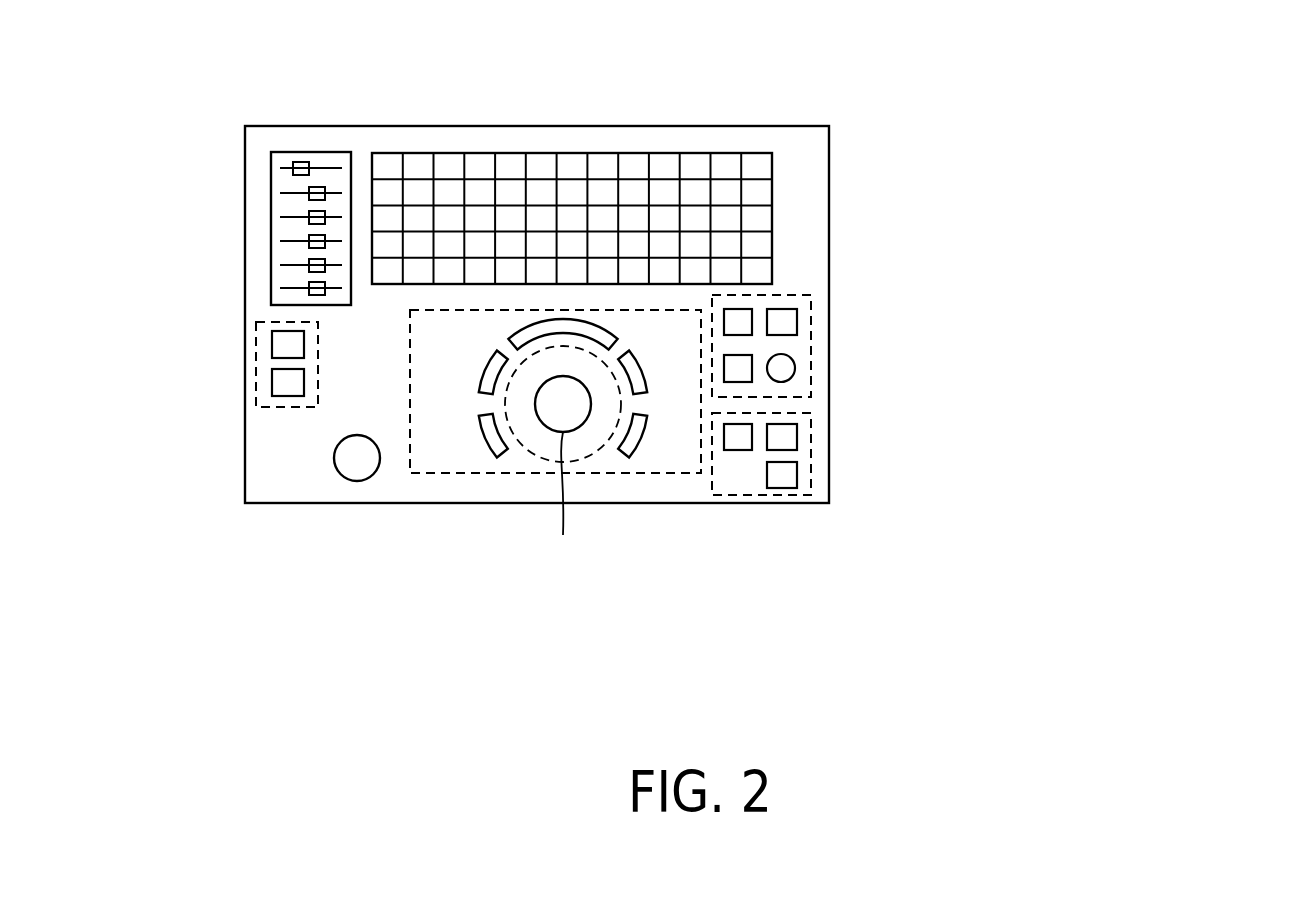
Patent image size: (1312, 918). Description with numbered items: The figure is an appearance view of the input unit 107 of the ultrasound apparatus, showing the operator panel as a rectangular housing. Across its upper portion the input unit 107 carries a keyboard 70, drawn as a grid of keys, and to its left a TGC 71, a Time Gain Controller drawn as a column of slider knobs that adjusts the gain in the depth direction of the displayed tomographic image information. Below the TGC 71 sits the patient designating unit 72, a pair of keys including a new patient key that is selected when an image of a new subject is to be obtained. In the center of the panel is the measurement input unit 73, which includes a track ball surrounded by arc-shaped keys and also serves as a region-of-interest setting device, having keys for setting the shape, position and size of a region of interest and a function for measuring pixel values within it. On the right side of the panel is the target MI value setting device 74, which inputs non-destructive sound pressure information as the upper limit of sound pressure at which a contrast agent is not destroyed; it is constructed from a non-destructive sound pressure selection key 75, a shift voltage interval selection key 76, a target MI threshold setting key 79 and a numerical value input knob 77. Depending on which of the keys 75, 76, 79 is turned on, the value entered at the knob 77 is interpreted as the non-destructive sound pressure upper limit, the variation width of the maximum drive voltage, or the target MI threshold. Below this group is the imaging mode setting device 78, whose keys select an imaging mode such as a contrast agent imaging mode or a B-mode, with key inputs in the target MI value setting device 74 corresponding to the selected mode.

The input unit 107 is at (721, 126).
The keyboard 70 is at (772, 192).
The TGC 71 is at (302, 152).
The patient designating unit 72 is at (250, 353).
The measurement input unit 73 is at (677, 480).
The target MI value setting device 74 is at (1004, 341).
The non-destructive sound pressure selection key 75 is at (797, 325).
The shift voltage interval selection key 76 is at (748, 382).
The numerical value input knob 77 is at (795, 368).
The imaging mode setting device 78 is at (811, 470).
The target MI threshold setting key 79 is at (753, 317).